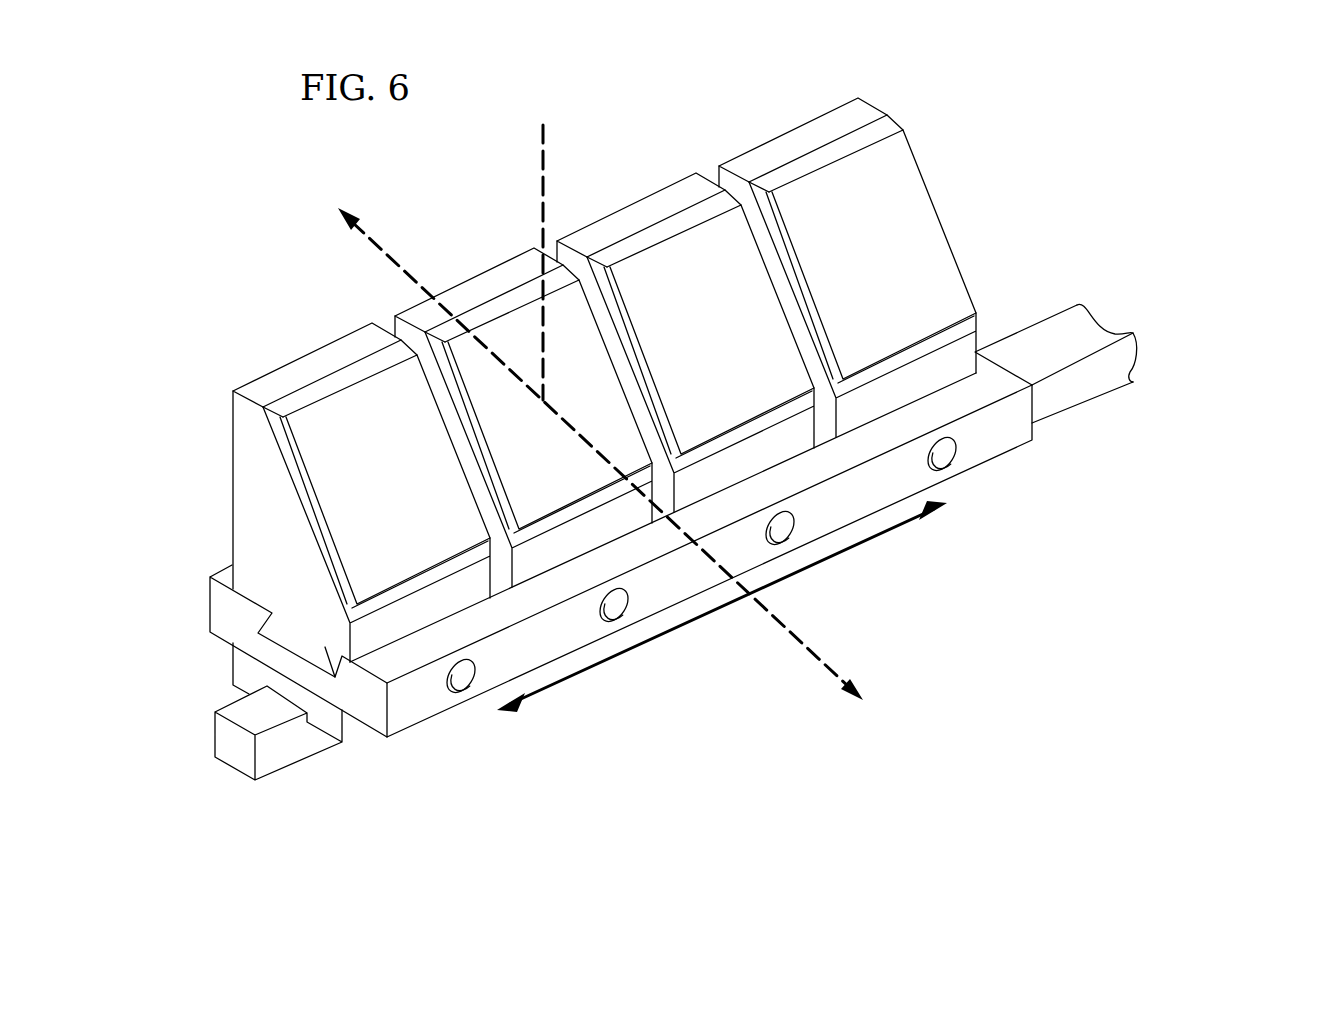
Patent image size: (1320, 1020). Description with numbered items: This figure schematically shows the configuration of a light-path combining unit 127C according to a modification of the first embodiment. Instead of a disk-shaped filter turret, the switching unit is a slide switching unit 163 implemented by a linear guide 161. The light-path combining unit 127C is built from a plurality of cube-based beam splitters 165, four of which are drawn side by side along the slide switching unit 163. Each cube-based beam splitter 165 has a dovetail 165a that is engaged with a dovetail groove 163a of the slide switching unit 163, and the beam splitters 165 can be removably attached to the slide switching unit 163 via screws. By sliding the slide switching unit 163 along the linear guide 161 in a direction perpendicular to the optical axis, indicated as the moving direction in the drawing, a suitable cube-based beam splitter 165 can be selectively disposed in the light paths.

The light-path combining unit 127C is at (1055, 152).
The linear guide 161 is at (278, 766).
The slide switching unit 163 is at (983, 462).
The dovetail groove 163a is at (277, 620).
The cube-based beam splitter 165 is at (667, 253).
The dovetail 165a is at (320, 673).